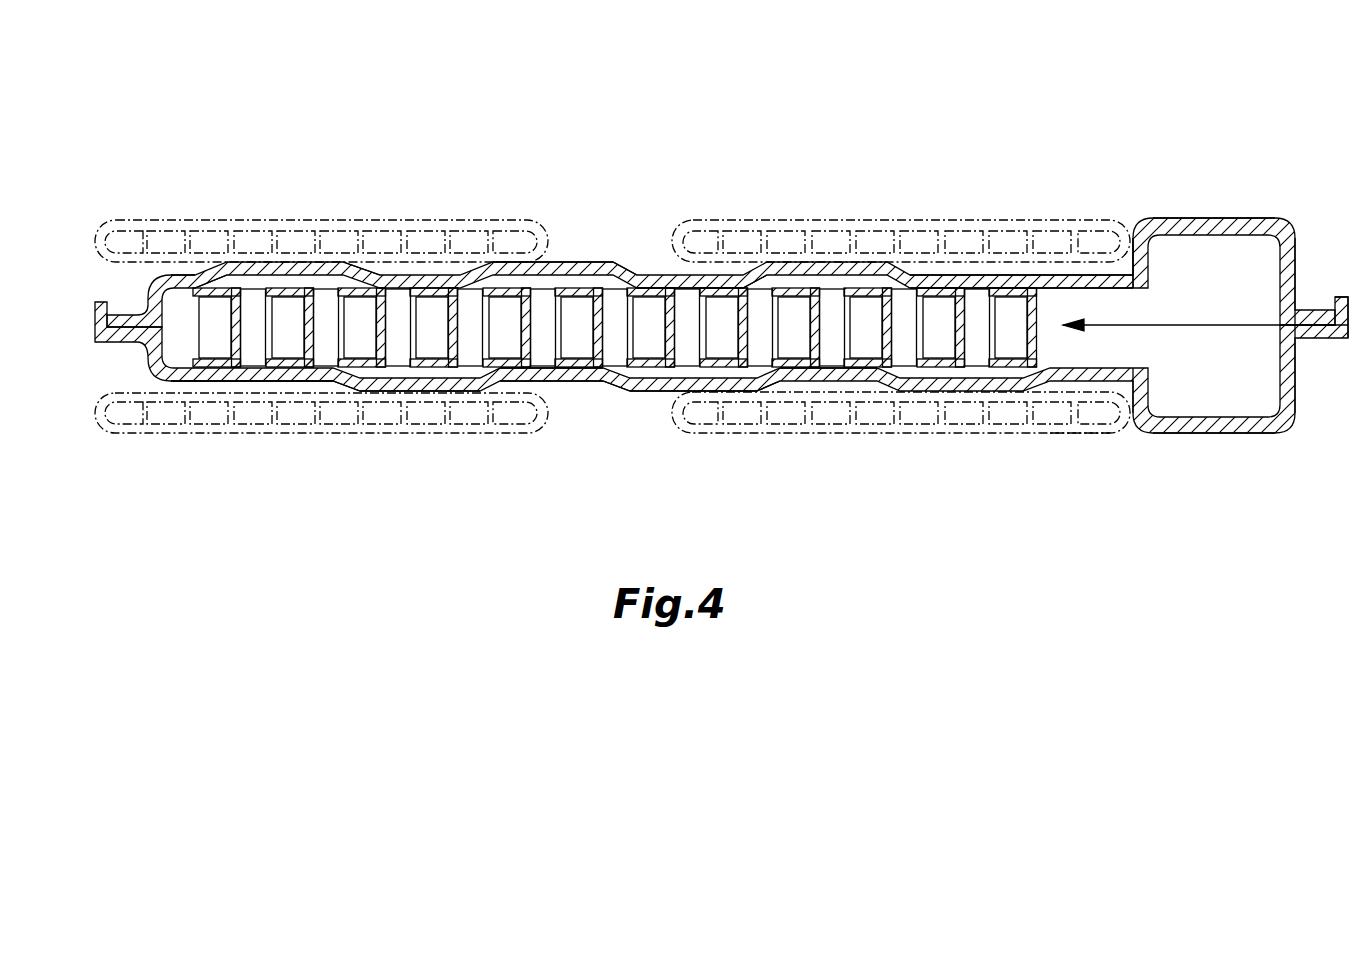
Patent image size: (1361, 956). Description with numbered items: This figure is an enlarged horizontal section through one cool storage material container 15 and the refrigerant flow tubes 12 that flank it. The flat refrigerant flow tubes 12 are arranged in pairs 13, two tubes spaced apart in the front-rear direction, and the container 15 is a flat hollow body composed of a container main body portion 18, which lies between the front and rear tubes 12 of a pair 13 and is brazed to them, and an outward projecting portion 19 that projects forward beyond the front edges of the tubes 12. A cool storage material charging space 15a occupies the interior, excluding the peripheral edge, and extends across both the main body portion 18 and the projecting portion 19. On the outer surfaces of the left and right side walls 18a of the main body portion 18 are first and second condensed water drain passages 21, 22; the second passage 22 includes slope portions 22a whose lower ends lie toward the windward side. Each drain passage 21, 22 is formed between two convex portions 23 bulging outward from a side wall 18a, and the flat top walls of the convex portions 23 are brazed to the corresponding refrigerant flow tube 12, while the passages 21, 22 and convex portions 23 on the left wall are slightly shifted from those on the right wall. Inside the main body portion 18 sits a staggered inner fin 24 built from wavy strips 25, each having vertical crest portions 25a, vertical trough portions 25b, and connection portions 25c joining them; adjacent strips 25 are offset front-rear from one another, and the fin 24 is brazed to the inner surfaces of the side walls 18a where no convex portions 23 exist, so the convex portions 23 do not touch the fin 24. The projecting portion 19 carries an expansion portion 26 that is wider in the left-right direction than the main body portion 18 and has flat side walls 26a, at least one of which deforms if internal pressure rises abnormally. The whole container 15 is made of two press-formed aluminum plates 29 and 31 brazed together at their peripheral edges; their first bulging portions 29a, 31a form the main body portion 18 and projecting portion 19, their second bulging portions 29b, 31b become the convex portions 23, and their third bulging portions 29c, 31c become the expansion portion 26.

The refrigerant flow tube 12 is at (105, 432).
The pair of refrigerant flow tubes 13 is at (1098, 433).
The cool storage material container 15 is at (1247, 130).
The cool storage material charging space 15a is at (1103, 290).
The container main body portion 18 is at (580, 381).
The side wall of container main body portion 18a is at (293, 382).
The outward projecting portion 19 is at (1292, 415).
The first condensed water drain passage 21 is at (383, 275).
The second condensed water drain passage 22 is at (703, 297).
The slope portion 22a is at (728, 275).
The convex portion 23 is at (253, 268).
The inner fin 24 is at (1090, 322).
The wavy strip 25 is at (615, 346).
The crest portion 25a is at (360, 365).
The trough portion 25b is at (325, 289).
The connection portion 25c is at (478, 340).
The expansion portion 26 is at (1222, 433).
The side wall of expansion portion 26a is at (1190, 219).
The aluminum plate 29 is at (113, 352).
The first bulging portion 29a is at (177, 382).
The second bulging portion 29b is at (640, 391).
The third bulging portion 29c is at (1267, 428).
The aluminum plate 31 is at (113, 303).
The first bulging portion 31a is at (177, 275).
The second bulging portion 31b is at (558, 262).
The third bulging portion 31c is at (1265, 226).